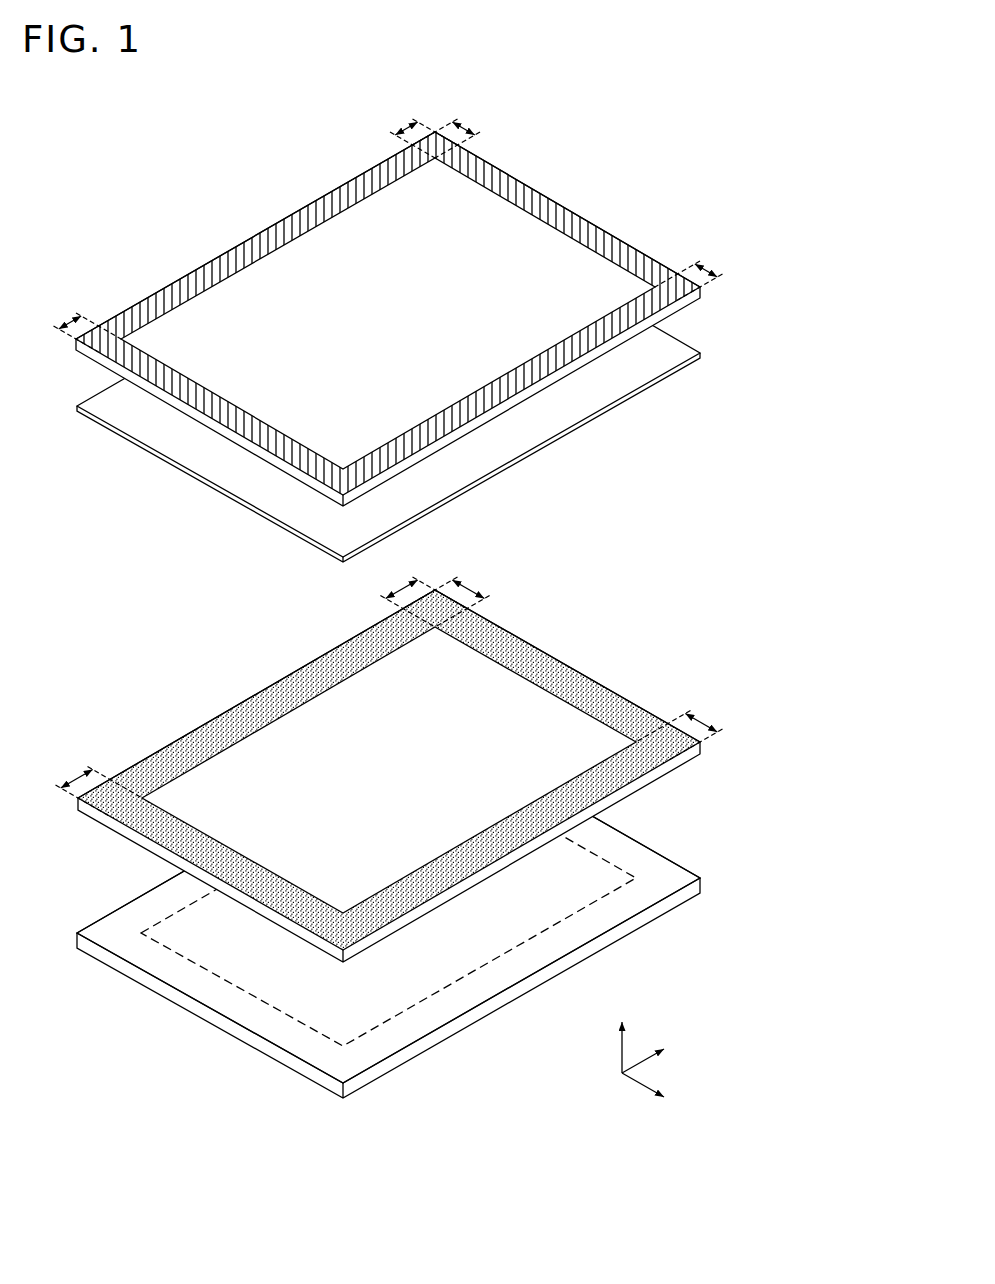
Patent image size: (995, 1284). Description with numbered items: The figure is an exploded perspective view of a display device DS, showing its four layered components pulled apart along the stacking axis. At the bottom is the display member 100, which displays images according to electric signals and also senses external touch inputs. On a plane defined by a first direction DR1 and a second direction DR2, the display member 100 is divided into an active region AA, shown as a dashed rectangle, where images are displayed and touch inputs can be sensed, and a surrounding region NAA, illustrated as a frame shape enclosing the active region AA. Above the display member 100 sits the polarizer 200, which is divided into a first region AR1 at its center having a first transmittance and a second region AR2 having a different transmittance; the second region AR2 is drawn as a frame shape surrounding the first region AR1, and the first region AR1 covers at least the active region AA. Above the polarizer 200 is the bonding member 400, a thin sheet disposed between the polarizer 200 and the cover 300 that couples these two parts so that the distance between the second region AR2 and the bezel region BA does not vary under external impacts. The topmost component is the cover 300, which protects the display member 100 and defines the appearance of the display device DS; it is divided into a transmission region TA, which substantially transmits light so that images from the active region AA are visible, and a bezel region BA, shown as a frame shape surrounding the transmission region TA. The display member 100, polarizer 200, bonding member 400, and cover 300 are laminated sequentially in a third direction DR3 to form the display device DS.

The display member 100 is at (427, 912).
The polarizer 200 is at (402, 761).
The cover 300 is at (404, 304).
The bonding member 400 is at (684, 340).
The display device DS is at (682, 176).
The active region AA is at (608, 858).
The surrounding region NAA is at (669, 867).
The transmission region TA is at (388, 235).
The bezel region BA is at (385, 227).
The first region AR1 is at (389, 694).
The second region AR2 is at (384, 688).
The first direction DR1 is at (662, 1091).
The second direction DR2 is at (662, 1056).
The third direction DR3 is at (622, 1037).